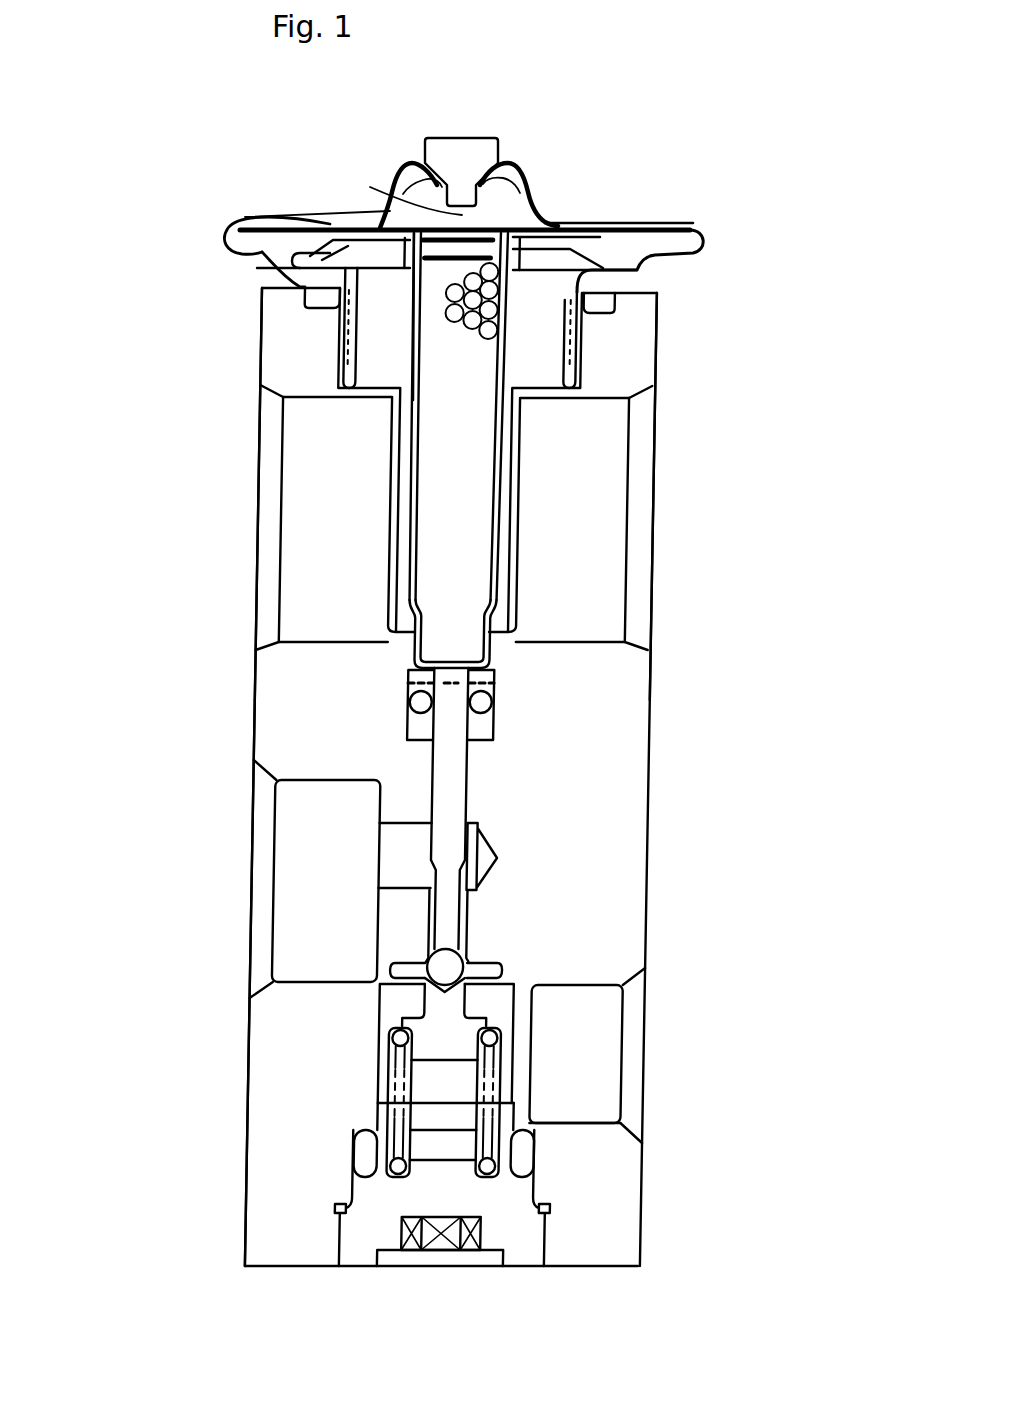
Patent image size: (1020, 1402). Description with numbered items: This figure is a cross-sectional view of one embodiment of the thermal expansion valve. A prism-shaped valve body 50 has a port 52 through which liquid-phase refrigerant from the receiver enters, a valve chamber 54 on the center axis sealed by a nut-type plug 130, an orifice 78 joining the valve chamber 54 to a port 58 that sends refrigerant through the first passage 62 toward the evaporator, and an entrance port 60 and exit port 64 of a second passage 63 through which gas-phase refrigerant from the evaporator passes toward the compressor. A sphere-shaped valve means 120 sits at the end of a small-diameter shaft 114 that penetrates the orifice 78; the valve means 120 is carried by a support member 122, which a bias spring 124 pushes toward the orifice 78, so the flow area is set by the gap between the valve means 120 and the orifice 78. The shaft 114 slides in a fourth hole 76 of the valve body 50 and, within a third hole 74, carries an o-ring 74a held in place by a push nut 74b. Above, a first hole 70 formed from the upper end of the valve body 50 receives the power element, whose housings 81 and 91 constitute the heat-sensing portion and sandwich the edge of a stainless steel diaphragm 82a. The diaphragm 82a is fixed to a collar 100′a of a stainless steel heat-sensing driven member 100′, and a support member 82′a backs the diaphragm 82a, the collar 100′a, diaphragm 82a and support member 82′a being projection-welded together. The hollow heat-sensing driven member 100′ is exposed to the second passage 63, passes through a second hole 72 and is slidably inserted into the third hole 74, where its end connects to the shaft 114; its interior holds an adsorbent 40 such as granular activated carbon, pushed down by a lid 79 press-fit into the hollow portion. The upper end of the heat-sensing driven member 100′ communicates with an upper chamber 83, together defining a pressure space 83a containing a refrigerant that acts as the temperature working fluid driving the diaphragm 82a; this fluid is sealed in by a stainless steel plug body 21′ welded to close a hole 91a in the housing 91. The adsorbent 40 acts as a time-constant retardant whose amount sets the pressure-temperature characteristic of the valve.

The plug body 21′ is at (488, 153).
The adsorbent 40 is at (498, 302).
The valve body 50 is at (655, 905).
The port 52 is at (647, 1005).
The valve chamber 54 is at (440, 1087).
The port 58 is at (250, 945).
The entrance port 60 is at (262, 412).
The first passage 62 is at (303, 780).
The second passage 63 is at (588, 402).
The exit port 64 is at (656, 412).
The first hole 70 is at (572, 345).
The second hole 72 is at (388, 458).
The third hole 74 is at (492, 731).
The o-ring 74a is at (486, 703).
The push nut 74b is at (495, 664).
The fourth hole 76 is at (430, 763).
The orifice 78 is at (475, 953).
The lid 79 is at (437, 270).
The housing 81 is at (240, 262).
The diaphragm 82a is at (608, 232).
The support member 82′a is at (290, 253).
The upper chamber 83 is at (397, 186).
The pressure space 83a is at (378, 212).
The housing 91 is at (240, 223).
The hole 91a is at (515, 168).
The heat-sensing driven member 100′ is at (500, 556).
The collar 100′a is at (407, 217).
The shaft 114 is at (457, 800).
The valve means 120 is at (447, 965).
The support member 122 is at (437, 1035).
The bias spring 124 is at (440, 1087).
The nut-type plug 130 is at (518, 1253).